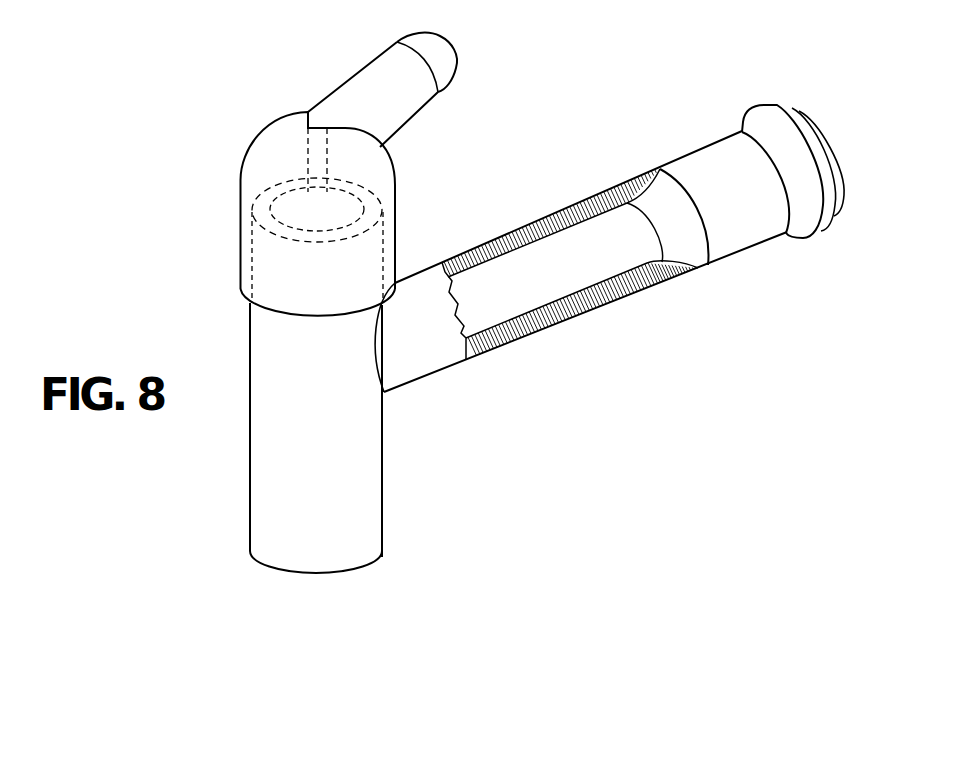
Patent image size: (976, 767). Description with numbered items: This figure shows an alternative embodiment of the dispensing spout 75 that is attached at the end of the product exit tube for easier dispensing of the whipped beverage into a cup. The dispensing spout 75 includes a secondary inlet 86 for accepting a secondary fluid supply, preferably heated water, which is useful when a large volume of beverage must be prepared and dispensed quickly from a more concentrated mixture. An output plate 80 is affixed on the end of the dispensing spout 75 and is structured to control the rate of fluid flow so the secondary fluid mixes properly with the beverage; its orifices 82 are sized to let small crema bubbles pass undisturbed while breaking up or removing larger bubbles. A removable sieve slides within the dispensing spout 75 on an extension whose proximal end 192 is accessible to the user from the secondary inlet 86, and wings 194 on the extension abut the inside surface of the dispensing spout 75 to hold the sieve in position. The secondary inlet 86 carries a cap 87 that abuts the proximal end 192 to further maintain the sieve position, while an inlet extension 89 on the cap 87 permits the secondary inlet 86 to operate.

The orifices 82 is at (136, 0).
The cap 87 is at (299, 128).
The proximal end 192 is at (316, 143).
The wings 194 is at (285, 265).
The secondary inlet 86 is at (342, 224).
The output plate 80 is at (313, 548).
The inlet extension 89 is at (443, 36).
The dispensing spout 75 is at (518, 300).